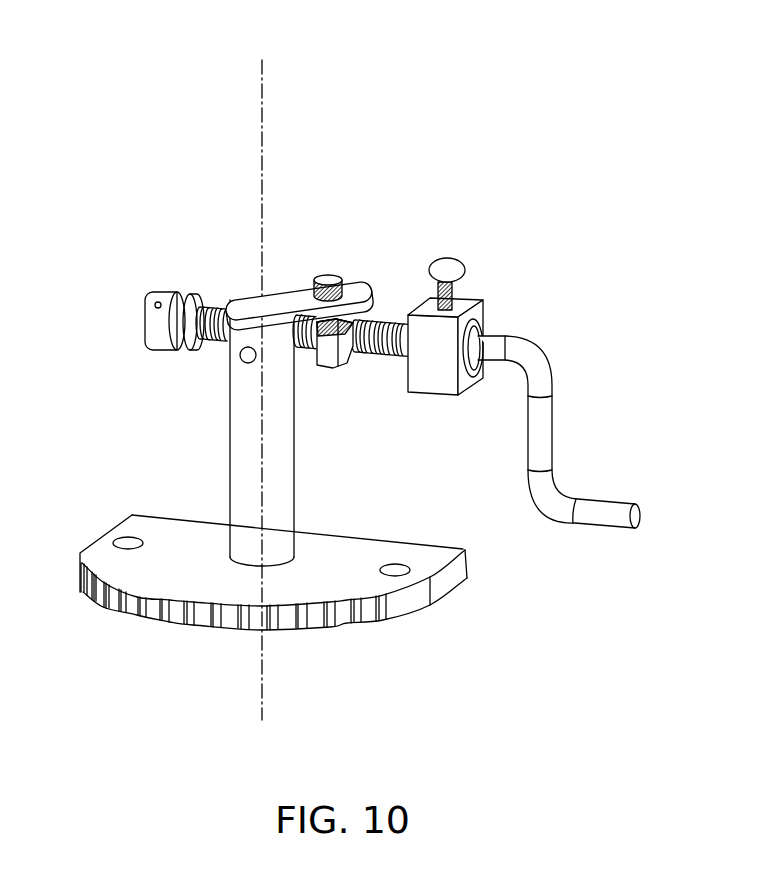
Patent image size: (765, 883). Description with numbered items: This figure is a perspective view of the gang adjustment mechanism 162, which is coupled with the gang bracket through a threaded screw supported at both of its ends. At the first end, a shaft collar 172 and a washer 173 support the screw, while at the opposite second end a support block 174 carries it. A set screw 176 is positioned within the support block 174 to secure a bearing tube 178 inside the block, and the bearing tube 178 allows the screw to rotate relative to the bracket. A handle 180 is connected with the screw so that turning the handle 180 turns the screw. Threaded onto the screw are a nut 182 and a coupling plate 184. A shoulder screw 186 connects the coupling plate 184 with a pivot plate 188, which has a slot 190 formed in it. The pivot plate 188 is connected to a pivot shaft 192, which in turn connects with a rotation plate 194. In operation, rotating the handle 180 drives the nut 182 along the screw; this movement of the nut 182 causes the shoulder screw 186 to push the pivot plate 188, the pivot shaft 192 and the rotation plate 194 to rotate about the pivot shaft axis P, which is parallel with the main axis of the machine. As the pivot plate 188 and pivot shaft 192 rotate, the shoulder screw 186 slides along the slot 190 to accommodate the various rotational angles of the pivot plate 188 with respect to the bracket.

The gang adjustment mechanism 162 is at (156, 178).
The pivot shaft axis P is at (262, 123).
The shaft collar 172 is at (158, 290).
The washer 173 is at (190, 292).
The support block 174 is at (478, 298).
The set screw 176 is at (455, 258).
The bearing tube 178 is at (484, 308).
The handle 180 is at (600, 530).
The nut 182 is at (328, 366).
The coupling plate 184 is at (367, 307).
The shoulder screw 186 is at (337, 281).
The pivot plate 188 is at (285, 297).
The slot 190 is at (355, 280).
The pivot shaft 192 is at (245, 450).
The rotation plate 194 is at (407, 600).